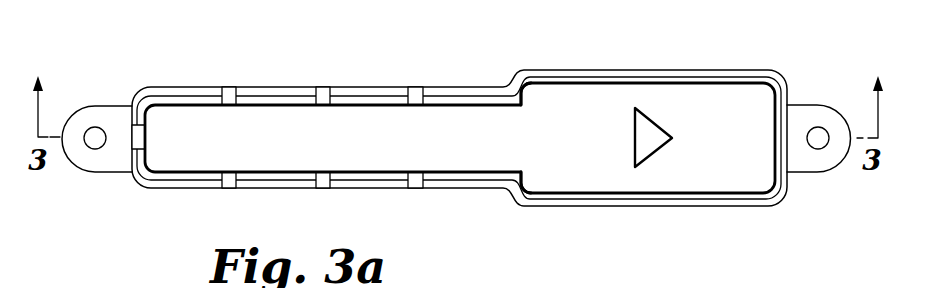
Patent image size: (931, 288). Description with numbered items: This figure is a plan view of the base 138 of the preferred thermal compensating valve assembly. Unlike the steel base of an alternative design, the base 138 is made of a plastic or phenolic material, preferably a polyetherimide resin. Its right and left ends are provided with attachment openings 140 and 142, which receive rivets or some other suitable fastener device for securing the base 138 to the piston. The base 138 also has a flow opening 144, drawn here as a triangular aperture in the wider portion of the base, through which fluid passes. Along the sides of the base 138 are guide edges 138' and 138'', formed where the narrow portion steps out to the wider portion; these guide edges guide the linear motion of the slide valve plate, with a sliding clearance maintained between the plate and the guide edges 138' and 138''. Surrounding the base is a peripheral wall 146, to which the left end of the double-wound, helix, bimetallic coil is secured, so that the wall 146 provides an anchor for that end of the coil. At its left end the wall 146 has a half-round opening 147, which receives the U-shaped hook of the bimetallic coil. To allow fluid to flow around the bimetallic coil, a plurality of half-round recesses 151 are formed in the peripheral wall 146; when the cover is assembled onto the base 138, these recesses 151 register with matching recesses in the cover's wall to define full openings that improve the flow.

The base 138 is at (460, 170).
The guide edge 138' is at (566, 56).
The guide edge 138'' is at (565, 216).
The attachment opening 140 is at (105, 127).
The attachment opening 142 is at (829, 132).
The flow opening 144 is at (648, 122).
The peripheral wall 146 is at (147, 116).
The half-round opening 147 is at (154, 191).
The half-round recesses 151 is at (322, 97).